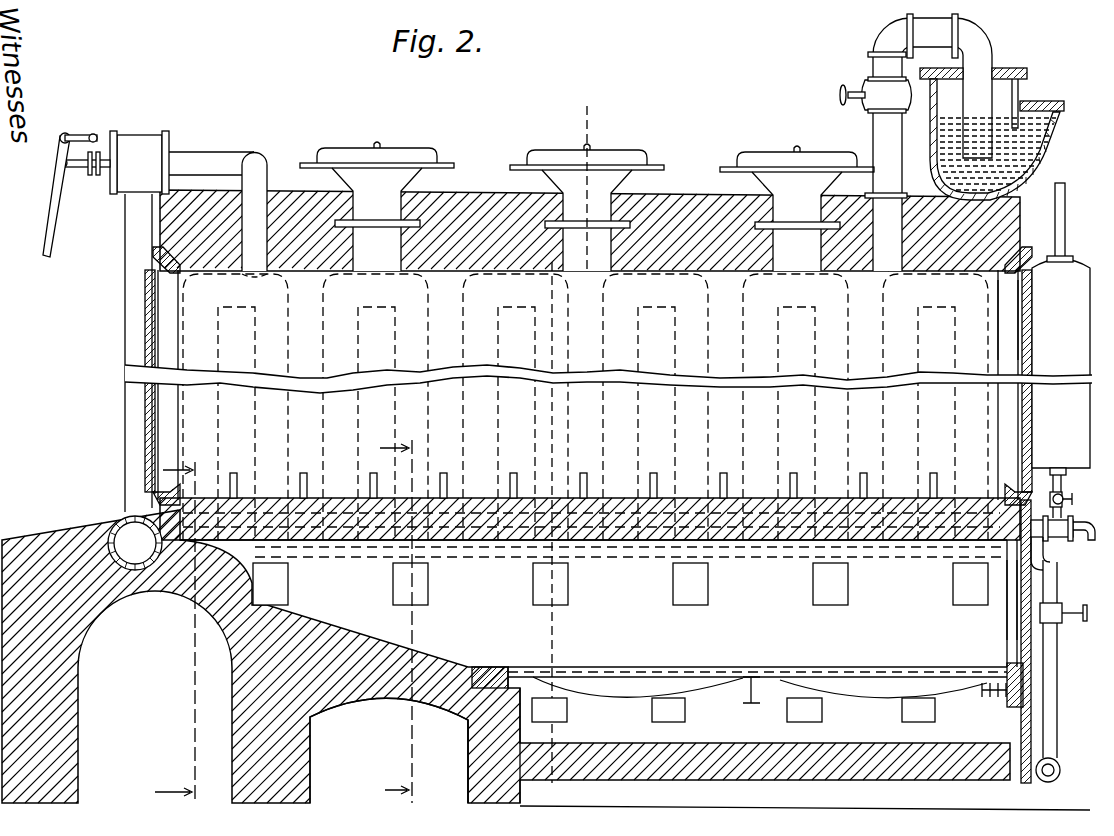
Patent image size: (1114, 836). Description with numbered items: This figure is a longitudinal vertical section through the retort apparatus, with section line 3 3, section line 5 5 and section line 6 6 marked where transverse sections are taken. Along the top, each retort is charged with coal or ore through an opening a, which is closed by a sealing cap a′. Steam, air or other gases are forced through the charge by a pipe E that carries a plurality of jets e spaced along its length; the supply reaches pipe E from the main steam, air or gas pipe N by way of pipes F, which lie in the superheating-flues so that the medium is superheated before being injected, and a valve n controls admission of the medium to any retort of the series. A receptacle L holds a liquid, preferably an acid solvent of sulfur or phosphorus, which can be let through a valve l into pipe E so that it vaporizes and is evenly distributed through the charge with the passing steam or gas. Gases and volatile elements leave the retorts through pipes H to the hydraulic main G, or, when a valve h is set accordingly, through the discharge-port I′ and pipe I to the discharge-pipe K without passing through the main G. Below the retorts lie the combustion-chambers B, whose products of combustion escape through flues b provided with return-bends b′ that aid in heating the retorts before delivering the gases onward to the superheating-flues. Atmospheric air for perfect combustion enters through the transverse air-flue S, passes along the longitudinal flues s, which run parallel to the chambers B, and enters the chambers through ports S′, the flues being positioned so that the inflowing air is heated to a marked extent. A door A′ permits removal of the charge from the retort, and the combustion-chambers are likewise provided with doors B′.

The discharge-pipe K is at (86, 172).
The pipe I is at (218, 211).
The discharge-port I′ is at (253, 286).
The sealing cap a′ is at (388, 153).
The charging opening a is at (587, 219).
The section line 3 3 is at (568, 445).
The valve h is at (868, 87).
The pipe H is at (876, 130).
The hydraulic main G is at (1032, 115).
The receptacle L is at (1061, 329).
The retort door A′ is at (1025, 340).
The return-bend b′ is at (182, 418).
The flue b is at (705, 418).
The section line 5 5 is at (182, 622).
The section line 6 6 is at (403, 611).
The jet e is at (508, 484).
The steam, air, or gas pipe E is at (1046, 493).
The valve l is at (1072, 493).
The superheating pipe F is at (484, 552).
The combustion-chamber B is at (650, 634).
The combustion-chamber door B′ is at (1018, 632).
The valve n is at (1063, 626).
The main steam, air, or gas pipe N is at (1061, 770).
The air-flue S is at (389, 750).
The port S′ is at (665, 712).
The longitudinal flue s is at (494, 745).